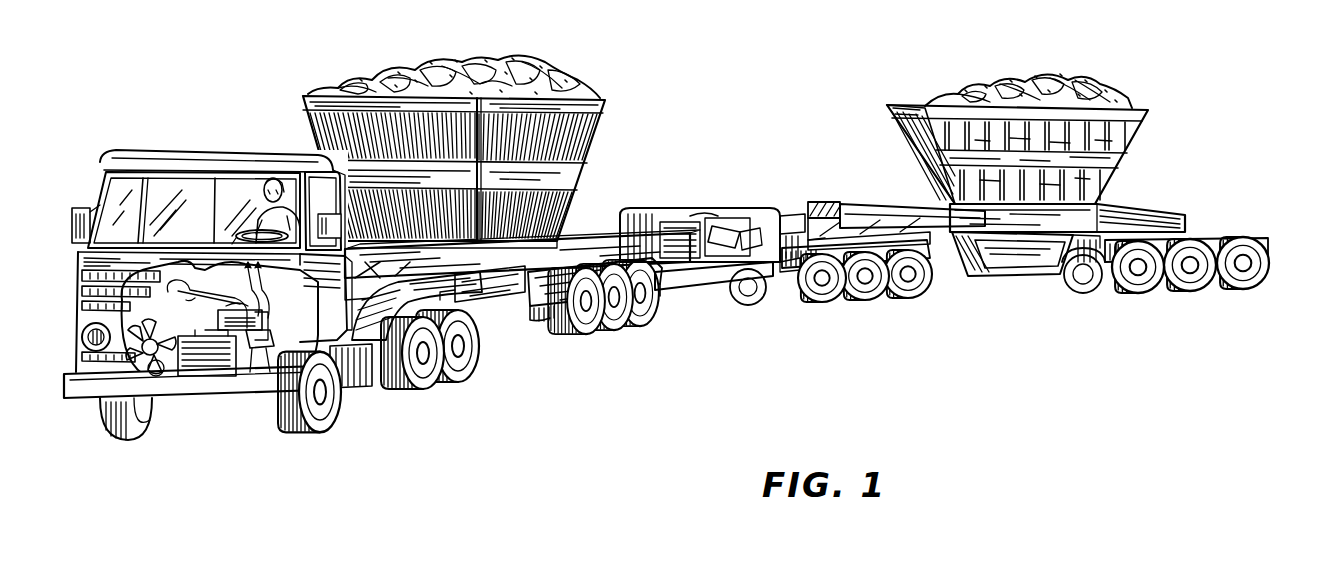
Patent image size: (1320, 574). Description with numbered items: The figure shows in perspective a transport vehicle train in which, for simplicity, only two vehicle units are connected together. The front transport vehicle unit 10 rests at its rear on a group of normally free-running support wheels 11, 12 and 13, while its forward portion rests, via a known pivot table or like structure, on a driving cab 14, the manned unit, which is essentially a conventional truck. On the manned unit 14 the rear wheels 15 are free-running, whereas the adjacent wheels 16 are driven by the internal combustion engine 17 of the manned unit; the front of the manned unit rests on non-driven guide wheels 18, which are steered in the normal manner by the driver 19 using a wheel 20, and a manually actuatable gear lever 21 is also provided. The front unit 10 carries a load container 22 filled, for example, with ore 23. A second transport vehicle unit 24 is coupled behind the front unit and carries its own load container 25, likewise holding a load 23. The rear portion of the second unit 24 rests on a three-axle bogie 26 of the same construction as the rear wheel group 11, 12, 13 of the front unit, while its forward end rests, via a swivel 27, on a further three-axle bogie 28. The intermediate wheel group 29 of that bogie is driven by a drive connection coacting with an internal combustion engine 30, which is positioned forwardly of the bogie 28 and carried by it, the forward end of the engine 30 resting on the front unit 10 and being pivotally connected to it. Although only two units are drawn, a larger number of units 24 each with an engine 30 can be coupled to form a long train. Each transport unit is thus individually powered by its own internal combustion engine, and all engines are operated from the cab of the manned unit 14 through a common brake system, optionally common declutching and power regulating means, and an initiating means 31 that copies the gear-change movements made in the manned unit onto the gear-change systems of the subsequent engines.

The transport vehicle unit 10 is at (575, 232).
The support wheel 11 is at (585, 323).
The support wheel 12 is at (623, 316).
The support wheel 13 is at (647, 312).
The driving cab 14 is at (193, 150).
The rear wheels 15 is at (470, 368).
The adjacent wheels 16 is at (422, 382).
The internal combustion engine 17 is at (178, 380).
The guide wheels 18 is at (130, 420).
The driver 19 is at (280, 181).
The wheel 20 is at (262, 231).
The gear lever 21 is at (206, 278).
The load container 22 is at (580, 133).
The ore 23 is at (493, 68).
The second transport vehicle unit 24 is at (1082, 212).
The load container 25 is at (1118, 128).
The three-axle bogie 26 is at (1214, 238).
The swivel 27 is at (845, 208).
The three-axle bogie 28 is at (882, 216).
The intermediate wheel group 29 is at (870, 300).
The internal combustion engine 30 is at (697, 213).
The initiating means 31 is at (258, 350).